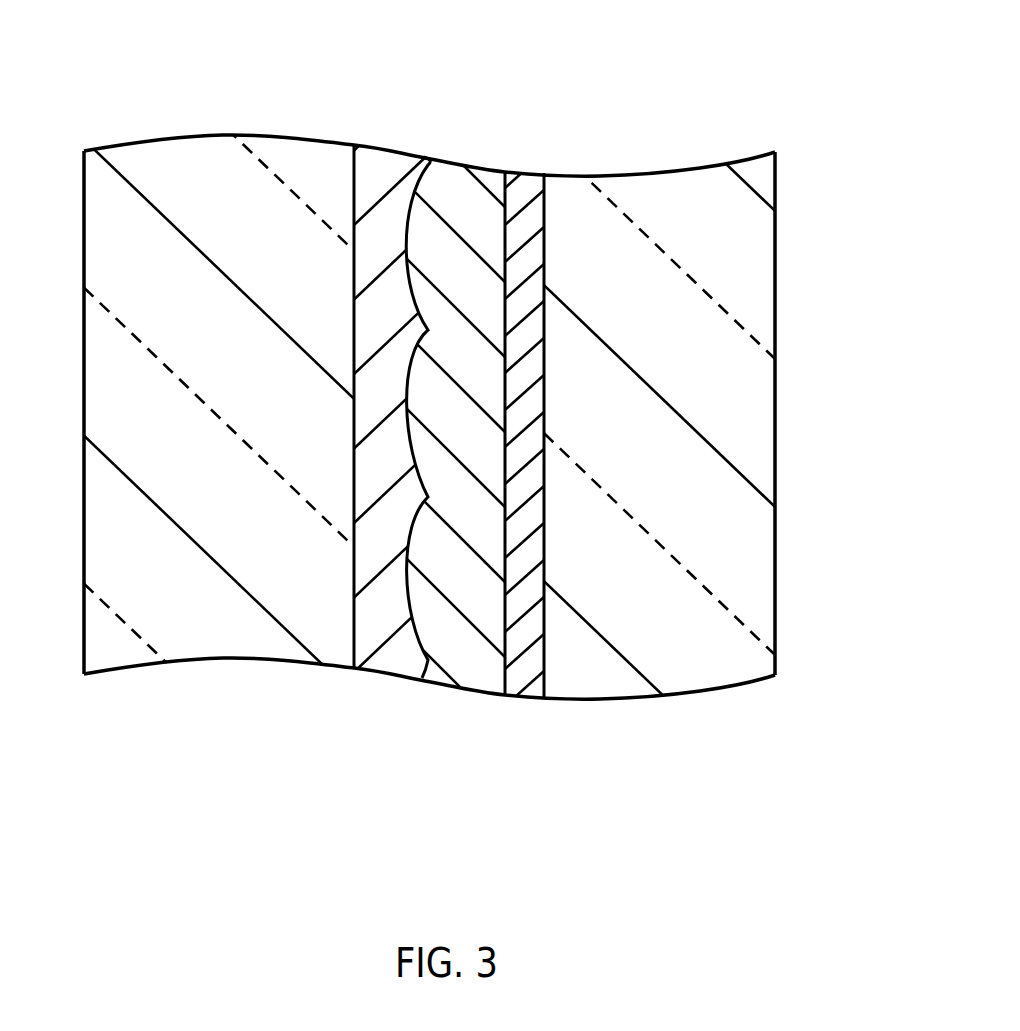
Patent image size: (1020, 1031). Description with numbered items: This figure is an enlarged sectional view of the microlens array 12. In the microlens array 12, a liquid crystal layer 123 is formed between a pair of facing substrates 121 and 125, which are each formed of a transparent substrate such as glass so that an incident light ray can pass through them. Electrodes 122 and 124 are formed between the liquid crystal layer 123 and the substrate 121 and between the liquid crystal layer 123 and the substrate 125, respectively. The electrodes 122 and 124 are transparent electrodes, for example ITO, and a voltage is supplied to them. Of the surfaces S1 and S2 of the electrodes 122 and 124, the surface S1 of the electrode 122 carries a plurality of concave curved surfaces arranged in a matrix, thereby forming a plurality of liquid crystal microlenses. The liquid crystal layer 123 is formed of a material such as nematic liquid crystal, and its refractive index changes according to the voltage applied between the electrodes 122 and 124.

The microlens array 12 is at (735, 102).
The substrate 121 is at (240, 642).
The electrode 122 is at (390, 657).
The liquid crystal layer 123 is at (465, 672).
The electrode 124 is at (525, 678).
The substrate 125 is at (635, 688).
The surface of electrode S1 is at (421, 233).
The surface of electrode S2 is at (498, 222).